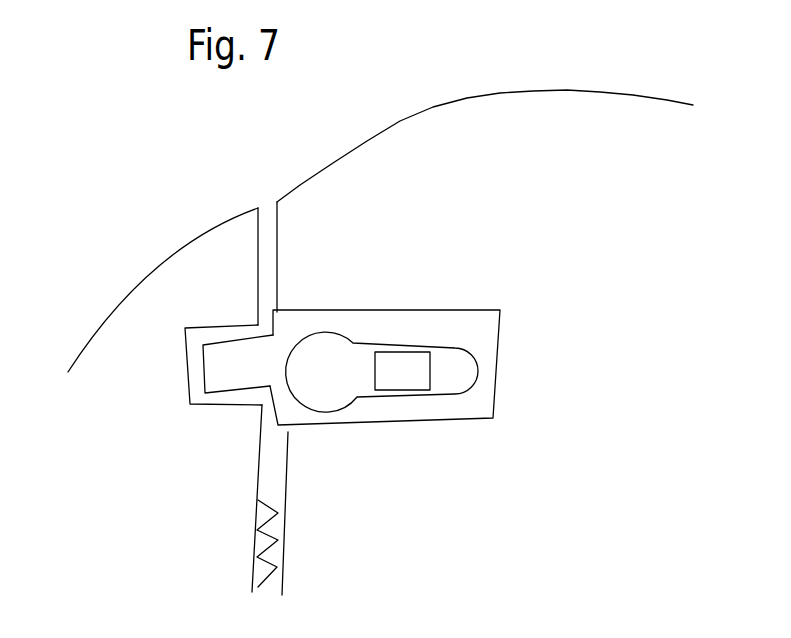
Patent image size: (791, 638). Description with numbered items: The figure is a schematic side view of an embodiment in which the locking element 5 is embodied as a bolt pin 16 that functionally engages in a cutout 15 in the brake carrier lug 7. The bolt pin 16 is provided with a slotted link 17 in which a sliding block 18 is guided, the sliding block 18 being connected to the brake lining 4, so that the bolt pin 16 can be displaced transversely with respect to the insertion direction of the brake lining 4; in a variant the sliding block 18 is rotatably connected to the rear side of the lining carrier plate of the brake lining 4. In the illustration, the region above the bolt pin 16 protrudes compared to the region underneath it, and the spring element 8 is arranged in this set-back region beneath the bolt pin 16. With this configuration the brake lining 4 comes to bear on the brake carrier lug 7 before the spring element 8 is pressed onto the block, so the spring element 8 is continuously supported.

The brake lining 4 is at (553, 120).
The locking element 5 is at (367, 327).
The brake carrier lug 7 is at (145, 312).
The spring element 8 is at (255, 570).
The cutout 15 is at (248, 395).
The bolt pin 16 is at (213, 360).
The slotted link 17 is at (350, 373).
The sliding block 18 is at (403, 362).